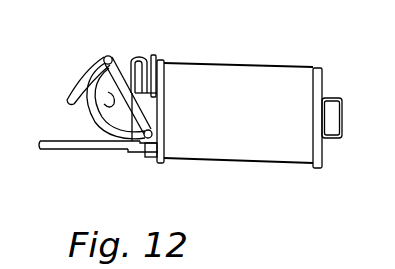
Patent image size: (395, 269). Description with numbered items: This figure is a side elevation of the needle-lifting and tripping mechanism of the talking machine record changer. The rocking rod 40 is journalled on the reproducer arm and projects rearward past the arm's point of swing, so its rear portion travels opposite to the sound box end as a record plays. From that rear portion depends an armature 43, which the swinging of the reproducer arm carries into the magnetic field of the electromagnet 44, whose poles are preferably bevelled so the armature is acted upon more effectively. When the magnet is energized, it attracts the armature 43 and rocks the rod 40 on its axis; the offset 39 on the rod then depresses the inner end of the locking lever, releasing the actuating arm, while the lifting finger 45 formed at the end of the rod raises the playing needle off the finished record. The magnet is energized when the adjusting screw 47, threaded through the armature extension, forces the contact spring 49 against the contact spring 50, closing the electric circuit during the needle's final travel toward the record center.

The offset 39 is at (87, 75).
The rocking rod 40 is at (108, 56).
The armature 43 is at (112, 130).
The electromagnet 44 is at (310, 75).
The lifting finger 45 is at (136, 145).
The adjusting screw 47 is at (110, 100).
The contact spring 49 is at (132, 57).
The contact spring 50 is at (153, 55).